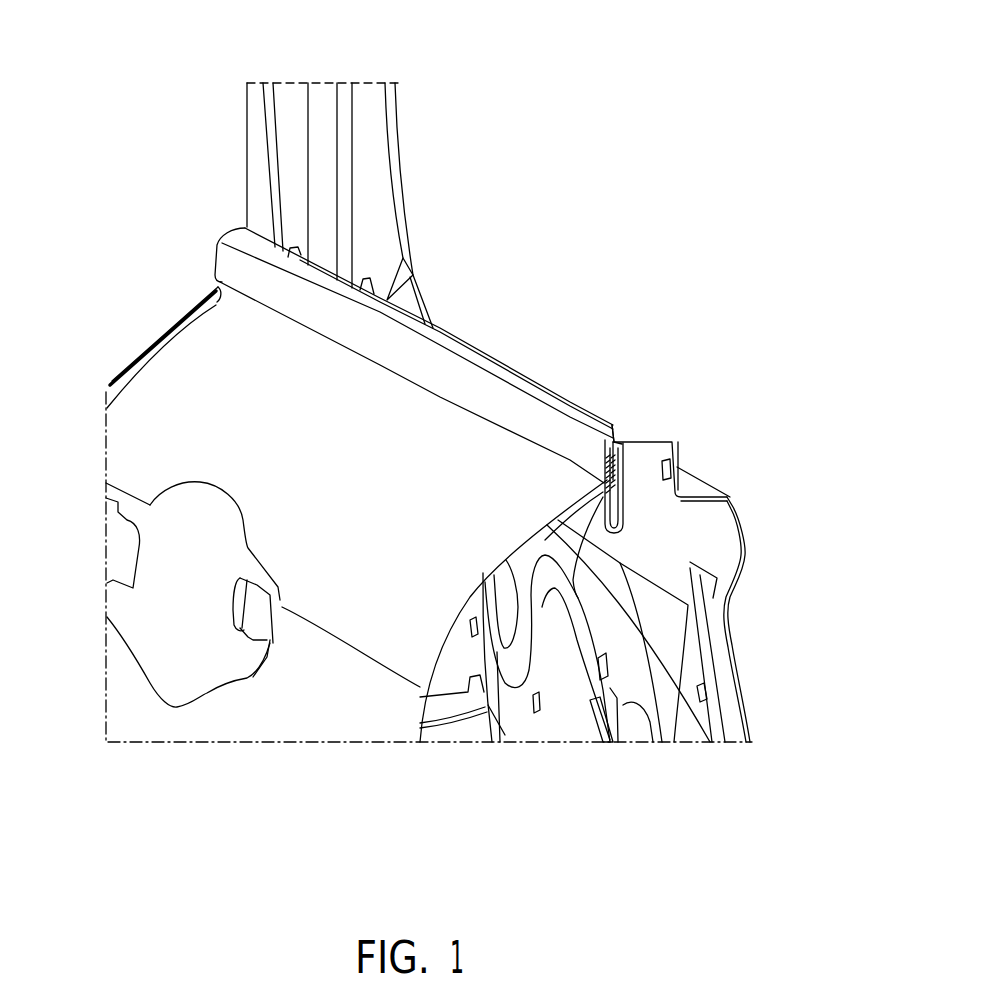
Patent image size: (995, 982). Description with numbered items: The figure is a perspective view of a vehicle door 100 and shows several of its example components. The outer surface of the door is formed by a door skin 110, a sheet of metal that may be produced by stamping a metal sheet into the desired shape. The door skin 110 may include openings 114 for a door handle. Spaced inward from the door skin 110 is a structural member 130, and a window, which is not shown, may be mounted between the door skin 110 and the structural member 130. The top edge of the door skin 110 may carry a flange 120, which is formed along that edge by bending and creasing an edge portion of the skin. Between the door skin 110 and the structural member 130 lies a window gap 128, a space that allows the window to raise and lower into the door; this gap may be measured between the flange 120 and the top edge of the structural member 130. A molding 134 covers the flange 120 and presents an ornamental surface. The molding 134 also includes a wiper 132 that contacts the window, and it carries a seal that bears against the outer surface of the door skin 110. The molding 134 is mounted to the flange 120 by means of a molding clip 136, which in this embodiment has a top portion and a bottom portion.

The vehicle door 100 is at (180, 59).
The door skin 110 is at (157, 402).
The openings 114 is at (247, 623).
The flange 120 is at (618, 490).
The window gap 128 is at (675, 438).
The structural member 130 is at (732, 498).
The wiper 132 is at (620, 432).
The molding 134 is at (229, 263).
The molding clip 136 is at (626, 514).